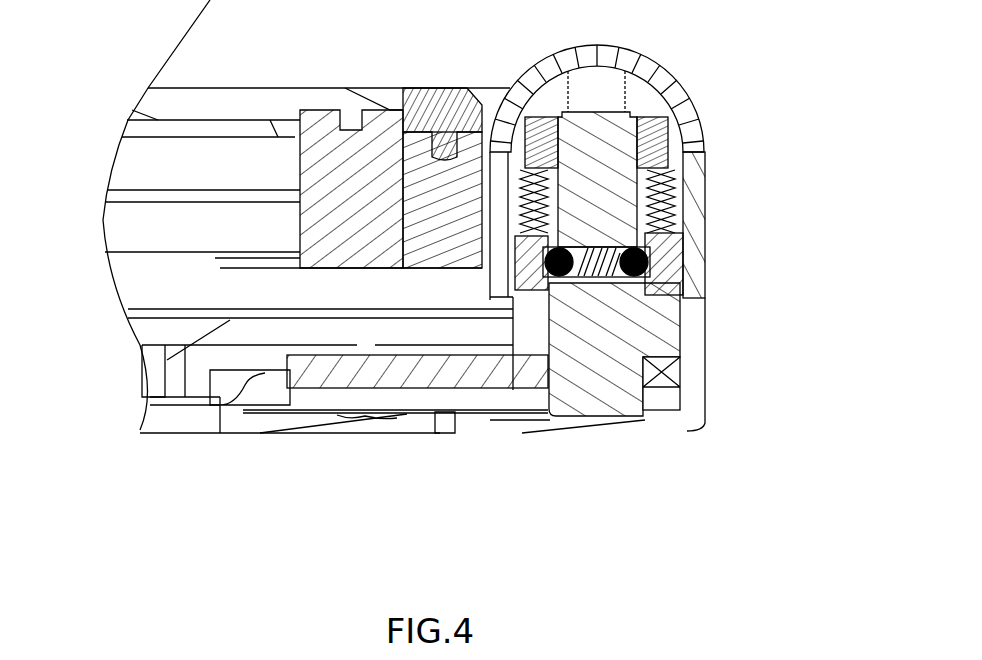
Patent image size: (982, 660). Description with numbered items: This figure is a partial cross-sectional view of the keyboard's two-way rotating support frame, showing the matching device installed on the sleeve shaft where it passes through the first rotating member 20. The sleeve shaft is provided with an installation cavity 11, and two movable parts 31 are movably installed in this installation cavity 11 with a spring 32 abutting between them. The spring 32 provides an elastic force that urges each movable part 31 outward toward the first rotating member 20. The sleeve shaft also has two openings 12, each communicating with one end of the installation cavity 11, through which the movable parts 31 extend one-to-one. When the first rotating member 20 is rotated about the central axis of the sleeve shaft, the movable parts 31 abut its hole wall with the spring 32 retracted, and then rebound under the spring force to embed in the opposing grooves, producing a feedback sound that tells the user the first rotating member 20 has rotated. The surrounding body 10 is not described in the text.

The valve housing 10 is at (652, 340).
The installation cavity 11 is at (593, 401).
The opening 12 is at (543, 283).
The first rotating member 20 is at (672, 262).
The movable part 31 is at (694, 314).
The spring 32 is at (583, 275).